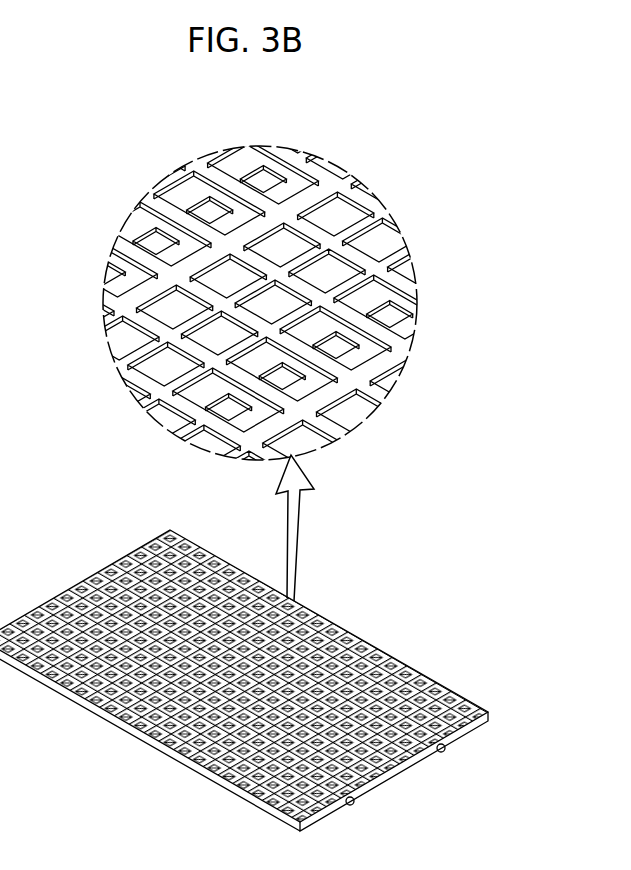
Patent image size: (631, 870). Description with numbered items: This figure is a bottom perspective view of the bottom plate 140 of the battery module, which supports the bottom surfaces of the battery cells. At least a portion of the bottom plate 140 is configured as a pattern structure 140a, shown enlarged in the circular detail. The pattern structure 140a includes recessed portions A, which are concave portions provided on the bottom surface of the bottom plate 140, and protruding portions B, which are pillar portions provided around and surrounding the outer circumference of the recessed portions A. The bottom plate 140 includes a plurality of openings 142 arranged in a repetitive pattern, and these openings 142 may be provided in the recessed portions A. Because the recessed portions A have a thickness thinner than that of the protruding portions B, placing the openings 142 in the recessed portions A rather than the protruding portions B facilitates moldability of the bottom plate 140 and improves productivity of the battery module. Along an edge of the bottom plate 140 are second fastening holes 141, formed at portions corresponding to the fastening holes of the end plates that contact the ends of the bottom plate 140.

The bottom plate 140 is at (338, 624).
The pattern structure 140a is at (107, 569).
The second fastening holes 141 is at (354, 802).
The openings 142 is at (343, 347).
The recessed portions A is at (313, 328).
The protruding portions B is at (385, 333).